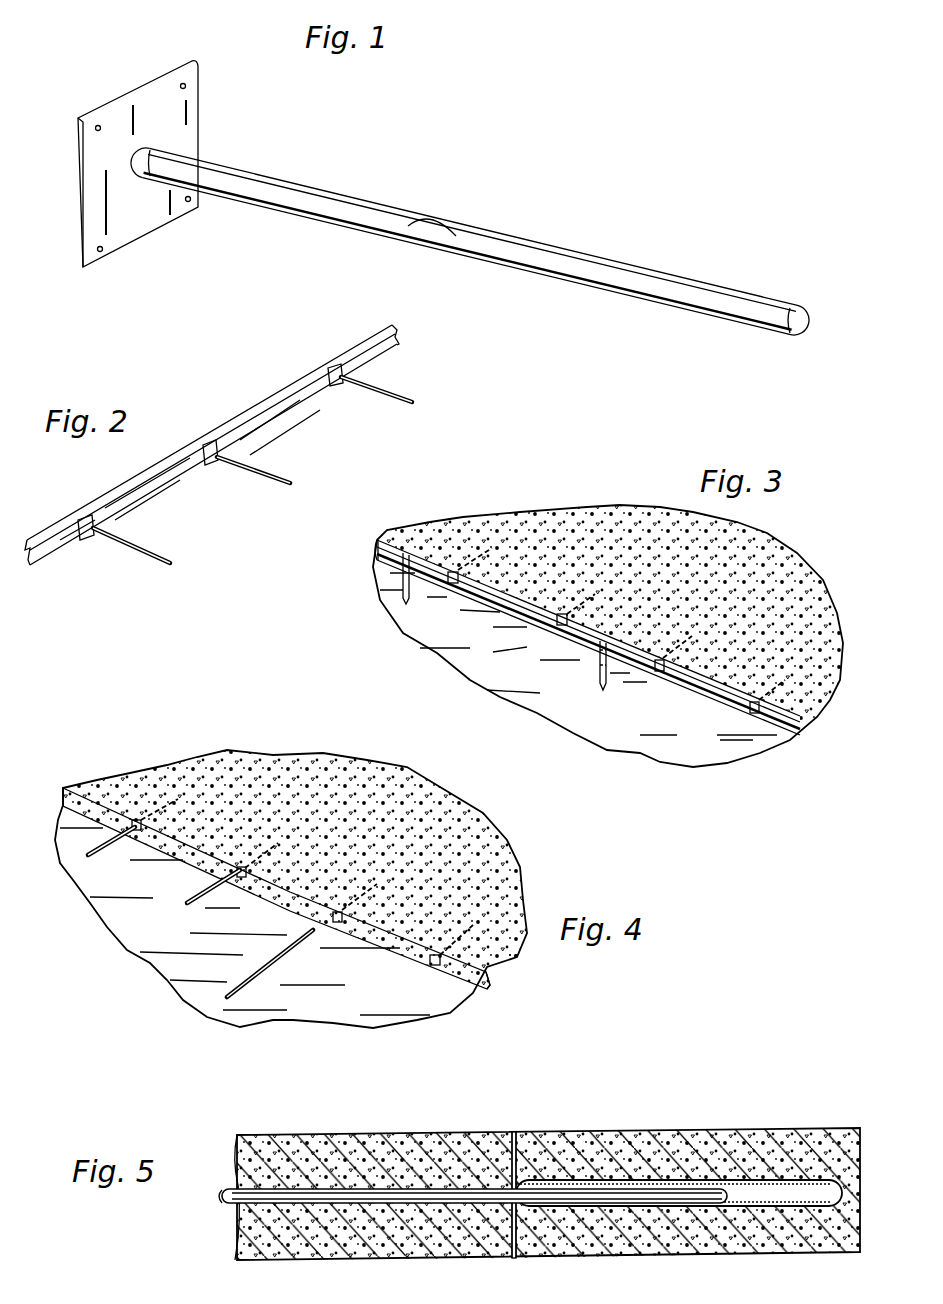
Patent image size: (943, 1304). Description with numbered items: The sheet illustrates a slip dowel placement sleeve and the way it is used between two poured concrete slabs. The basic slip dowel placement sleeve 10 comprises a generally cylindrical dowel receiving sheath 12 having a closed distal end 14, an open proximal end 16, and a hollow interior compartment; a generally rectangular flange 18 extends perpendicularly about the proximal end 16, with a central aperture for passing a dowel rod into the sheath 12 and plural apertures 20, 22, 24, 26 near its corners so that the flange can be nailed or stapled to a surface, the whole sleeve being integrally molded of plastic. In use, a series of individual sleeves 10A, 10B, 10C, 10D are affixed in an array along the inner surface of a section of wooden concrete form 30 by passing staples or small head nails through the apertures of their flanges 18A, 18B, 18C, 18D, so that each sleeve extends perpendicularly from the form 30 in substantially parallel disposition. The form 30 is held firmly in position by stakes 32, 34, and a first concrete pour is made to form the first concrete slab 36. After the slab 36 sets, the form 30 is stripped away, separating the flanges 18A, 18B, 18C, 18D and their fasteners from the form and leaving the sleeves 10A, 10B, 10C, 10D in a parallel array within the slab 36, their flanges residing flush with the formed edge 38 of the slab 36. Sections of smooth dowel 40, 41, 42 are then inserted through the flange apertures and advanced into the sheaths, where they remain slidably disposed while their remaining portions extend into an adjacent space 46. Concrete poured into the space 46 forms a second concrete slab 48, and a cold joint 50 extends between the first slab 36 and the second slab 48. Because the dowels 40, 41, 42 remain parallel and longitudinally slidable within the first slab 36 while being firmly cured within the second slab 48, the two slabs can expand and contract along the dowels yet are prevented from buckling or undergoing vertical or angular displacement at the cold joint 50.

In FIG. 1, the slip dowel placement sleeve 10 is at (470, 222).
In FIG. 1, the dowel receiving sheath 12 is at (545, 252).
In FIG. 1, the closed distal end 14 is at (797, 312).
In FIG. 1, the open proximal end 16 is at (176, 148).
In FIG. 1, the flange 18 is at (140, 90).
In FIG. 1, the aperture 20 is at (96, 130).
In FIG. 1, the aperture 22 is at (187, 87).
In FIG. 1, the aperture 24 is at (100, 252).
In FIG. 1, the aperture 26 is at (189, 203).
In FIG. 2, the wooden concrete form 30 is at (262, 397).
In FIG. 3, the wooden concrete form 30 is at (690, 693).
In FIG. 3, the stake 32 is at (378, 556).
In FIG. 3, the stake 34 is at (600, 650).
In FIG. 3, the first concrete slab 36 is at (583, 520).
In FIG. 4, the first concrete slab 36 is at (330, 783).
In FIG. 5, the first concrete slab 36 is at (547, 1169).
In FIG. 4, the formed edge 38 is at (373, 933).
In FIG. 4, the dowel 40 is at (110, 848).
In FIG. 5, the dowel 40 is at (222, 1207).
In FIG. 4, the dowel 41 is at (193, 893).
In FIG. 4, the dowel 42 is at (253, 983).
In FIG. 3, the adjacent space 46 is at (595, 730).
In FIG. 4, the adjacent space 46 is at (187, 967).
In FIG. 5, the second concrete slab 48 is at (363, 1147).
In FIG. 5, the cold joint 50 is at (514, 1134).
In FIG. 2, the slip dowel placement sleeve 10A is at (405, 398).
In FIG. 3, the slip dowel placement sleeve 10A is at (478, 555).
In FIG. 4, the slip dowel placement sleeve 10A is at (163, 800).
In FIG. 5, the slip dowel placement sleeve 10A is at (532, 1149).
In FIG. 2, the slip dowel placement sleeve 10B is at (285, 478).
In FIG. 3, the slip dowel placement sleeve 10B is at (573, 605).
In FIG. 4, the slip dowel placement sleeve 10B is at (273, 840).
In FIG. 2, the slip dowel placement sleeve 10C is at (160, 550).
In FIG. 3, the slip dowel placement sleeve 10C is at (683, 640).
In FIG. 4, the slip dowel placement sleeve 10C is at (367, 880).
In FIG. 3, the slip dowel placement sleeve 10D is at (770, 690).
In FIG. 4, the slip dowel placement sleeve 10D is at (463, 930).
In FIG. 2, the flange 18A is at (340, 385).
In FIG. 3, the flange 18A is at (452, 585).
In FIG. 4, the flange 18A is at (148, 830).
In FIG. 5, the flange 18A is at (518, 1150).
In FIG. 2, the flange 18B is at (212, 466).
In FIG. 3, the flange 18B is at (560, 628).
In FIG. 4, the flange 18B is at (240, 880).
In FIG. 2, the flange 18C is at (80, 542).
In FIG. 3, the flange 18C is at (655, 672).
In FIG. 4, the flange 18C is at (337, 917).
In FIG. 3, the flange 18D is at (755, 714).
In FIG. 4, the flange 18D is at (437, 965).